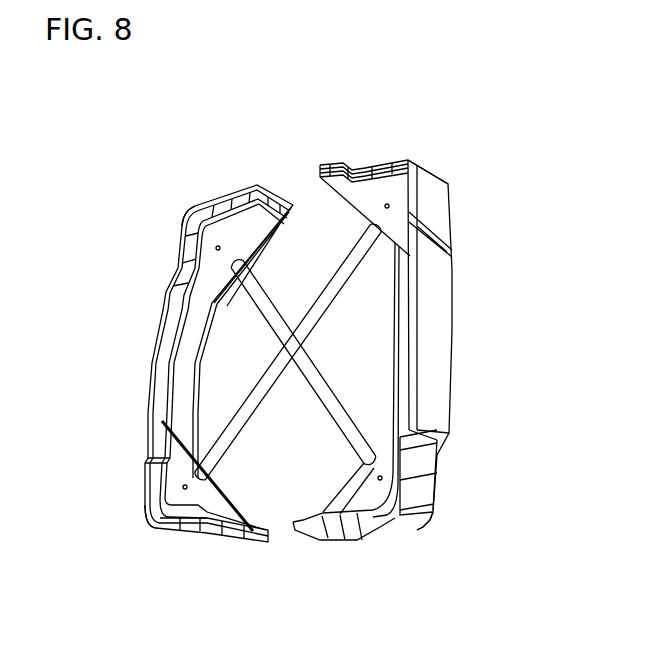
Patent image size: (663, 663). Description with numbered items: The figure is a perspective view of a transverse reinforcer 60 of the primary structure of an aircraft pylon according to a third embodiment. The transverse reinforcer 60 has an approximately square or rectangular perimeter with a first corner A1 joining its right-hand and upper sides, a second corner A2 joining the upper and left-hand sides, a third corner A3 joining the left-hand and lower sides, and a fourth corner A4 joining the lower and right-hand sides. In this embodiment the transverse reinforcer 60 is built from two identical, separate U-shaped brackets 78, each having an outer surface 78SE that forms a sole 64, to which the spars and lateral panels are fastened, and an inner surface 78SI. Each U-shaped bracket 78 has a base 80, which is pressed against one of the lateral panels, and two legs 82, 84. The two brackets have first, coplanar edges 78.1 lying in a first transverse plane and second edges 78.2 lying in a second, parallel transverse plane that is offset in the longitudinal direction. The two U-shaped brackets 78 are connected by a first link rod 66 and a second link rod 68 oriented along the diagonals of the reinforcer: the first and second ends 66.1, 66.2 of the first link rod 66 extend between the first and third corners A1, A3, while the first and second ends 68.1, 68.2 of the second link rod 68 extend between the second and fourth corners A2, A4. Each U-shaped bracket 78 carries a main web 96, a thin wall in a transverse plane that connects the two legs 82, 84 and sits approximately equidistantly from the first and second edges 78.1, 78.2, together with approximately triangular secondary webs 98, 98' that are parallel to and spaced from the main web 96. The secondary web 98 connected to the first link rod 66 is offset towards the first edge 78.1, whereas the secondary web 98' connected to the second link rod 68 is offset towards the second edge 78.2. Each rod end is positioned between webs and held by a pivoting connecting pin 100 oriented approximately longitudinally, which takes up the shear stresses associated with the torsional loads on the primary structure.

The transverse reinforcer 60 is at (280, 115).
The sole 64 is at (140, 330).
The first link rod 66 is at (262, 445).
The first end of the first link rod 66.1 is at (410, 233).
The second end of the first link rod 66.2 is at (190, 477).
The second link rod 68 is at (350, 384).
The first end of the second link rod 68.1 is at (232, 260).
The second end of the second link rod 68.2 is at (378, 467).
The U-shaped bracket 78 is at (142, 287).
The inner surface 78SI is at (170, 370).
The outer surface 78SE is at (435, 383).
The first edge 78.1 is at (438, 398).
The second edge 78.2 is at (447, 422).
The base 80 is at (435, 322).
The leg 82 is at (358, 163).
The leg 84 is at (350, 542).
The main web 96 is at (206, 343).
The secondary web 98 is at (240, 359).
The secondary web 98' is at (253, 220).
The pivoting connecting pin 100 is at (218, 246).
The first corner A1 is at (437, 172).
The second corner A2 is at (180, 214).
The third corner A3 is at (160, 545).
The fourth corner A4 is at (418, 530).